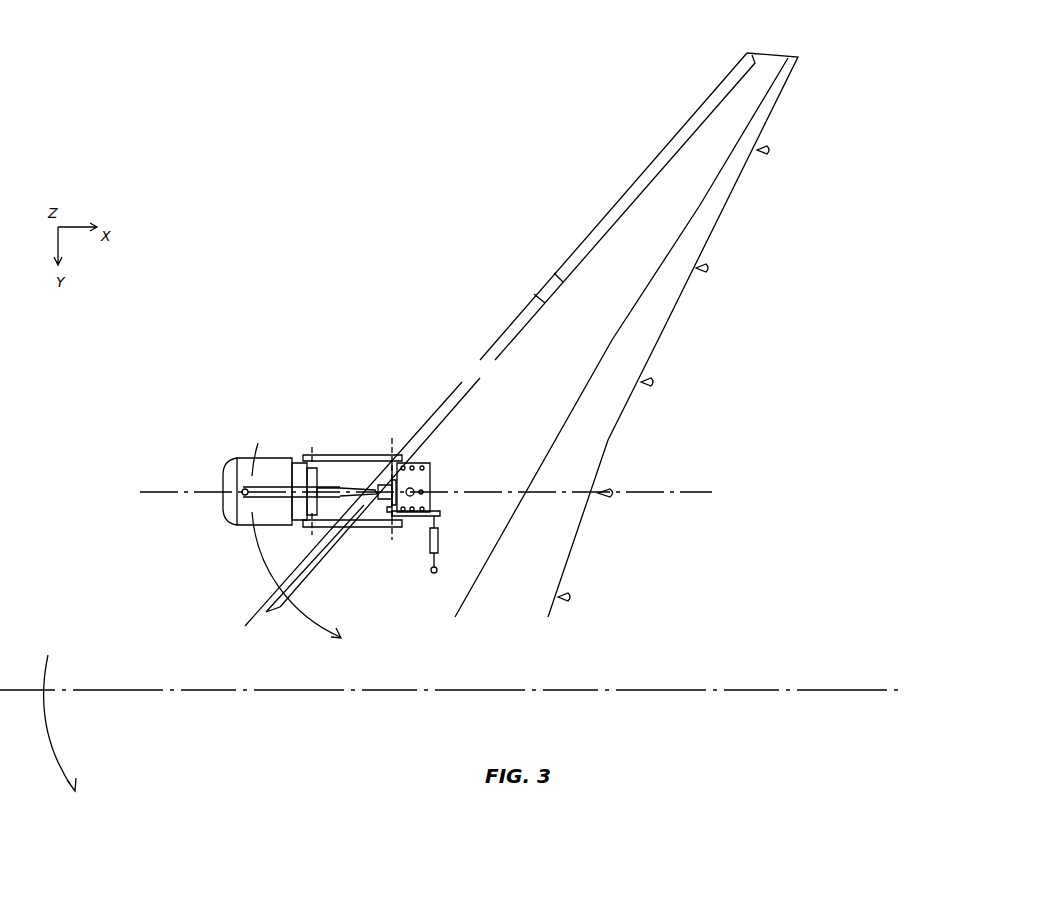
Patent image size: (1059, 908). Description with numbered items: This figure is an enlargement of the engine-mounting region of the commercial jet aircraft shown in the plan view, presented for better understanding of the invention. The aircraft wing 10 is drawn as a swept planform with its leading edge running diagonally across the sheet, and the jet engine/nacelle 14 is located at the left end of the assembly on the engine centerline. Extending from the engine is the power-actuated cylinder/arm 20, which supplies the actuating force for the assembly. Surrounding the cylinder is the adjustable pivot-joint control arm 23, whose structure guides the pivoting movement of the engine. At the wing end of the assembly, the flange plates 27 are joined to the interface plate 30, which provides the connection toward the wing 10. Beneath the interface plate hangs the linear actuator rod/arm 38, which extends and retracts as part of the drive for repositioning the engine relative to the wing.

The wing 10 is at (606, 300).
The jet engine/nacelle 14 is at (240, 457).
The power-actuated cylinder/arm 20 is at (273, 478).
The adjustable pivot-joint control arm 23 is at (345, 455).
The flange plates 27 is at (433, 473).
The interface plate 30 is at (432, 452).
The actuator (linear) rod/arm 38 is at (426, 561).